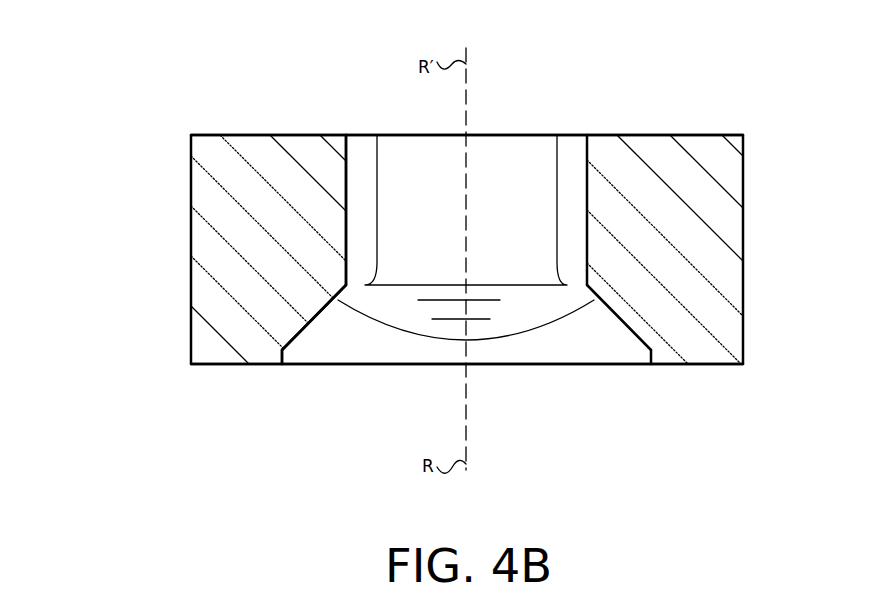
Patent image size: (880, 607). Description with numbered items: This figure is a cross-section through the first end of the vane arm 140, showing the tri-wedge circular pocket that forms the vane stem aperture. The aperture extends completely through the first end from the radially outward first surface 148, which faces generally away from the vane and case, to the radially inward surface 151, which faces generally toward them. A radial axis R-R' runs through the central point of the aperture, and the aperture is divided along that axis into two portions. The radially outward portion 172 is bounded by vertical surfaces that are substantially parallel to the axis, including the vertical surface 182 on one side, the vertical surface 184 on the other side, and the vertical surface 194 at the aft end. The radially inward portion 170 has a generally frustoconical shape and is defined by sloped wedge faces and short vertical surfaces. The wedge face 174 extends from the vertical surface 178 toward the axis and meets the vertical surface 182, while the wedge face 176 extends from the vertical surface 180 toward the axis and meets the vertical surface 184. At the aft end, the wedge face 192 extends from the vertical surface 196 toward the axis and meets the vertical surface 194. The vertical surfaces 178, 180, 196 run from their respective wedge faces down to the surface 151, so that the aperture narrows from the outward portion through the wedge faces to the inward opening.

The vane arm 140 is at (147, 84).
The first surface 148 is at (232, 135).
The surface 151 is at (210, 364).
The radially outward portion 172 is at (168, 138).
The radially inward portion 170 is at (168, 274).
The vertical surface 182 is at (348, 176).
The vertical surface 184 is at (586, 176).
The vertical surface 194 is at (513, 157).
The wedge face 174 is at (313, 322).
The vertical surface 178 is at (282, 355).
The wedge face 176 is at (624, 322).
The vertical surface 180 is at (650, 355).
The wedge face 192 is at (506, 305).
The vertical surface 196 is at (557, 320).